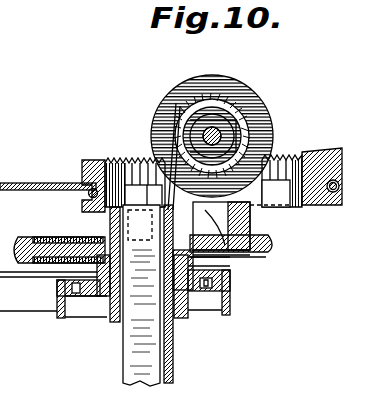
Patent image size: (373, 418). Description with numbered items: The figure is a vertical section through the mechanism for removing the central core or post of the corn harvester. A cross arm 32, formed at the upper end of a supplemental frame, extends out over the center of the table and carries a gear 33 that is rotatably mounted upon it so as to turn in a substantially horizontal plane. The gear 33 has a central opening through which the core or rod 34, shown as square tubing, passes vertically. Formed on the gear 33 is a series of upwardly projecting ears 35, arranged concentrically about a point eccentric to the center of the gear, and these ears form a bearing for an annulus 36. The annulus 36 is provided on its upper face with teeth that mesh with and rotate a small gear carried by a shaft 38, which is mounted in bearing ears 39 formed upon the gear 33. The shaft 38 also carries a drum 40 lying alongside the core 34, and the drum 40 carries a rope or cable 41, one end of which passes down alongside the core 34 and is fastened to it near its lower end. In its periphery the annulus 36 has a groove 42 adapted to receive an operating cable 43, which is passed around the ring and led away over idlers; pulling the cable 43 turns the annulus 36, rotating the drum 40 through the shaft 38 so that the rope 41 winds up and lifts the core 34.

The cross arm 32 is at (38, 293).
The gear 33 is at (236, 286).
The core or rod 34 is at (150, 368).
The ears 35 is at (145, 183).
The annulus 36 is at (295, 172).
The shaft 38 is at (222, 131).
The bearing ears 39 is at (210, 243).
The drum 40 is at (186, 98).
The rope or cable 41 is at (242, 124).
The groove 42 is at (90, 201).
The operating cable 43 is at (50, 178).